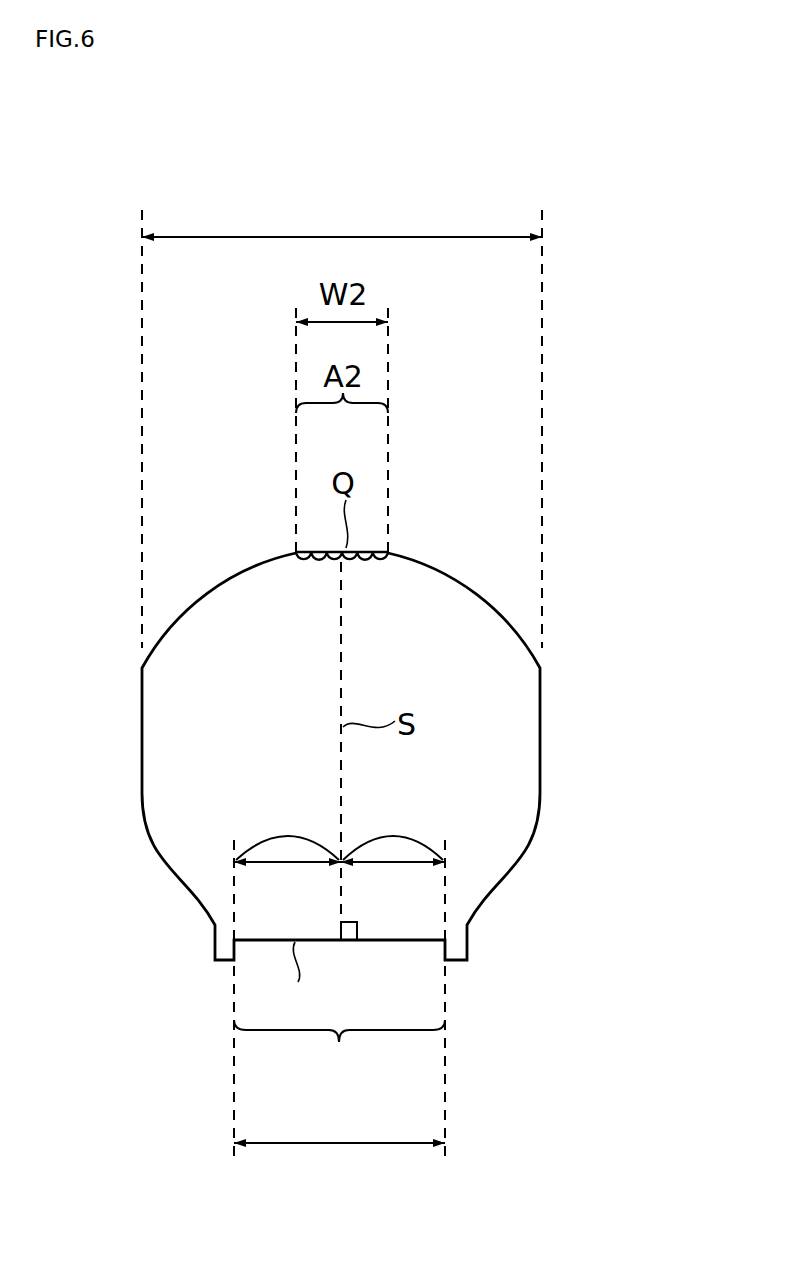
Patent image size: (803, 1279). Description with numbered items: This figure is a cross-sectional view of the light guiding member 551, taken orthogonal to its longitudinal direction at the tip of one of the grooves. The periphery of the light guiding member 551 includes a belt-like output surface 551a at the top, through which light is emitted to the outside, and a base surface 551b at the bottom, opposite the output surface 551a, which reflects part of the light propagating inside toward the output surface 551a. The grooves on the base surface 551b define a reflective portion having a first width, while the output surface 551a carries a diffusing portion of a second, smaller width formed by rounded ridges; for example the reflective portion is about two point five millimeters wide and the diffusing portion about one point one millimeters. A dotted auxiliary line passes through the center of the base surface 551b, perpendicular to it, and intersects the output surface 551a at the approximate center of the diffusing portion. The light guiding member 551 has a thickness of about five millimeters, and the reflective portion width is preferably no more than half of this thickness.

The light guiding member 551 is at (543, 693).
The output surface 551a is at (142, 182).
The base surface 551b is at (383, 955).